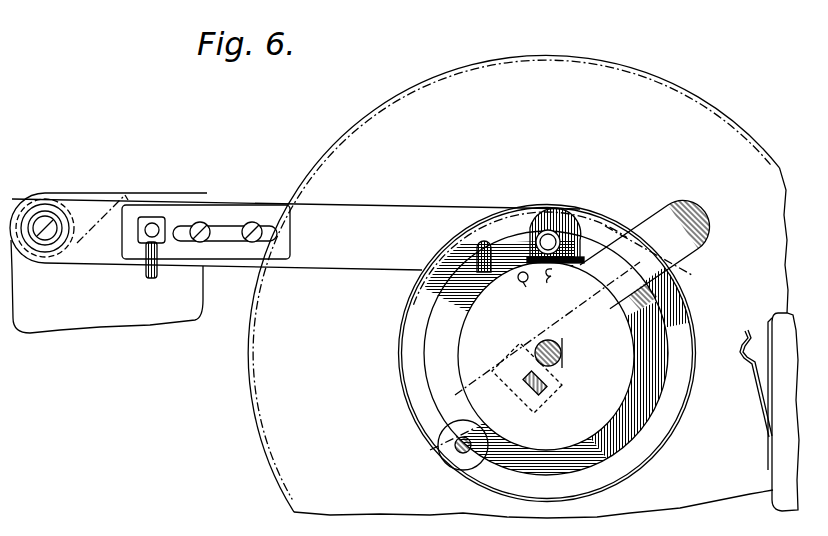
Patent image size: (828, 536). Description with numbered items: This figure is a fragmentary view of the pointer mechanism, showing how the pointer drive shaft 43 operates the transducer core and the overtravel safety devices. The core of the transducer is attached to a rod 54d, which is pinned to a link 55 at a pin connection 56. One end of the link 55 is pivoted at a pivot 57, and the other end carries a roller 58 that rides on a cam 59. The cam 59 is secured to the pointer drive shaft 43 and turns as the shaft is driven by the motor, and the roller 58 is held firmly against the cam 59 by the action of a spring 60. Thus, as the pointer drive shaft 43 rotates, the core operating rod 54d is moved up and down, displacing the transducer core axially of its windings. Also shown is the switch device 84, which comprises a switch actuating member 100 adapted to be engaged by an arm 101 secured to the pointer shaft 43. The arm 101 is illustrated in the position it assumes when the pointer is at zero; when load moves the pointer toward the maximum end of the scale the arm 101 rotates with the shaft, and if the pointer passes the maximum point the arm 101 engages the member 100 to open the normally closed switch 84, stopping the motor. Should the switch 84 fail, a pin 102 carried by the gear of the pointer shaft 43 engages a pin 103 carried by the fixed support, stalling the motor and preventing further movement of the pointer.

The link 55 is at (243, 203).
The pivot 57 is at (50, 217).
The spring 60 is at (101, 213).
The pin connection 56 is at (152, 224).
The rod 54d is at (147, 266).
The roller 58 is at (551, 230).
The cam 59 is at (583, 262).
The arm 101 is at (689, 228).
The pin 102 is at (521, 283).
The pin 103 is at (547, 280).
The pointer drive shaft 43 is at (562, 364).
The switch actuating member 100 is at (757, 372).
The switch device 84 is at (777, 425).